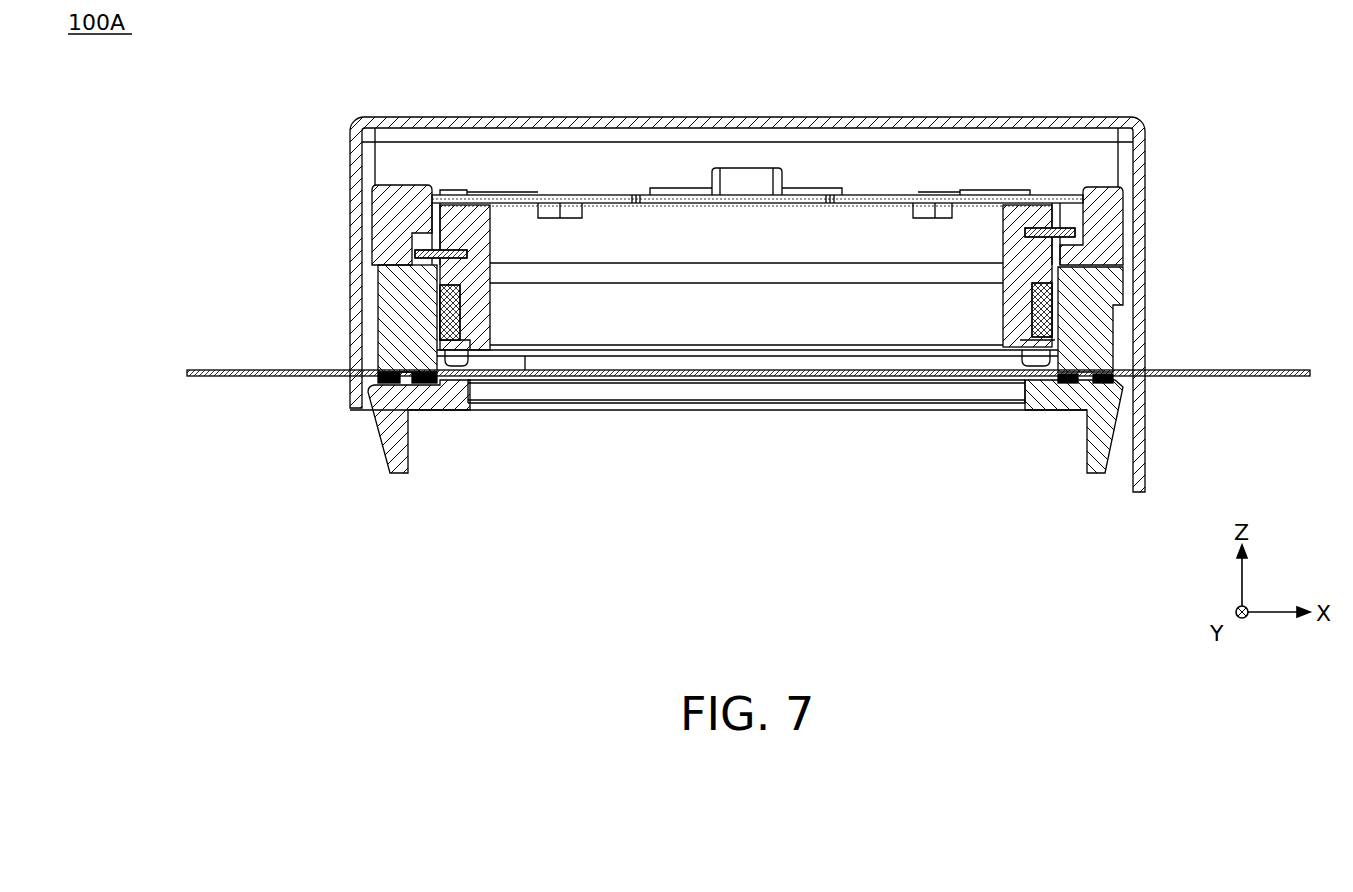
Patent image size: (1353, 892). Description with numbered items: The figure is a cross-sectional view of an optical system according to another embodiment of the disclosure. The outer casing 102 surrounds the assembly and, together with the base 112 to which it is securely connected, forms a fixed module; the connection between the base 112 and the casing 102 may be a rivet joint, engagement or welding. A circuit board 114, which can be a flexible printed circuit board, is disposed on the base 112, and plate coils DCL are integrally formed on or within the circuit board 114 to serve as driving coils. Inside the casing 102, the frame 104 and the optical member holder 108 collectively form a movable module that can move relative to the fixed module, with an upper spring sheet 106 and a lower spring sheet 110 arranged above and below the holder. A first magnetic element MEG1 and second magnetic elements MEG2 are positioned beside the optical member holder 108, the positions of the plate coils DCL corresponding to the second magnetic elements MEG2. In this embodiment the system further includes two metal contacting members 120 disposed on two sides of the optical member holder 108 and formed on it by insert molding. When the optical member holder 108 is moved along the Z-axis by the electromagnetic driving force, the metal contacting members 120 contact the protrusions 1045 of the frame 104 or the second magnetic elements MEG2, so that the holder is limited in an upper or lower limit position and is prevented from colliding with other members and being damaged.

The casing 102 is at (400, 118).
The frame 104 is at (387, 212).
The protrusions 1045 is at (425, 190).
The upper spring sheet 106 is at (1072, 195).
The optical member holder 108 is at (488, 303).
The lower spring sheet 110 is at (1017, 380).
The base 112 is at (385, 450).
The circuit board 114 is at (225, 370).
The metal contacting members 120 is at (393, 256).
The first magnetic element MEG1 is at (1055, 325).
The second magnetic elements MEG2 is at (392, 288).
The plate coils DCL is at (385, 370).